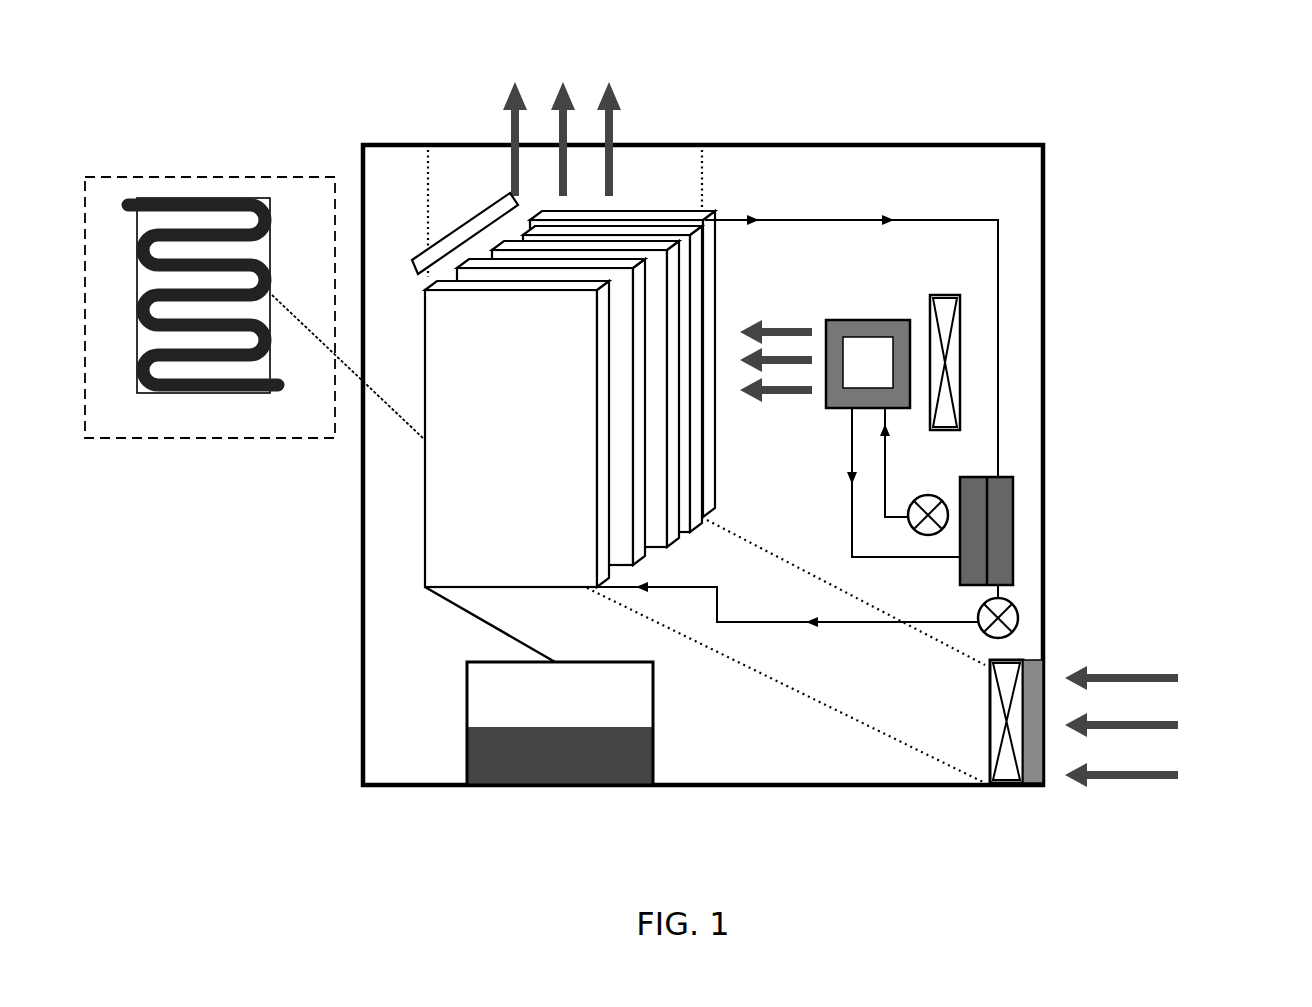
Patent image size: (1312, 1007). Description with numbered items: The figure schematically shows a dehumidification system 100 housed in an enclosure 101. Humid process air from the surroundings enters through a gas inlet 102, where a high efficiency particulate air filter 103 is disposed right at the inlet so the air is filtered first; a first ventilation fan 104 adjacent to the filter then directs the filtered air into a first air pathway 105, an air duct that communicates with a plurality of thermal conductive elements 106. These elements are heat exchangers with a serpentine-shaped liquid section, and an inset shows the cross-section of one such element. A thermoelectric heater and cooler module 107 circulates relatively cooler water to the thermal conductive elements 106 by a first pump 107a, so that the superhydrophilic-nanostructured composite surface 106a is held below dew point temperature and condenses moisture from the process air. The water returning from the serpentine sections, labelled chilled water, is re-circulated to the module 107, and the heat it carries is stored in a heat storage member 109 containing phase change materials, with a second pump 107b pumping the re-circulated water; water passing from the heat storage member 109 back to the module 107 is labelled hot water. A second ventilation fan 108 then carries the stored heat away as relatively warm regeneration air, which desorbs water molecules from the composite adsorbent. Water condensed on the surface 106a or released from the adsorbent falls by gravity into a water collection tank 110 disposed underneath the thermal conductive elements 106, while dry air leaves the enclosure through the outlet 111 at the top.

The system 100 is at (1068, 44).
The enclosure 101 is at (1043, 172).
The gas inlet 102 is at (1048, 671).
The high efficiency particulate air (HEPA) filter 103 is at (1036, 760).
The first ventilation fan 104 is at (1004, 772).
The first air pathway 105 is at (786, 651).
The thermal conductive elements 106 is at (400, 350).
The superhydrophilic-nanostructured composite surface 106a is at (517, 518).
The thermoelectric heater and cooler module 107 is at (1018, 530).
The first pump 107a is at (1022, 617).
The second pump 107b is at (946, 496).
The second ventilation fan 108 is at (942, 343).
The heat storage member 109 is at (868, 364).
The water collection tank 110 is at (539, 686).
The dry air outlet 111 is at (512, 145).